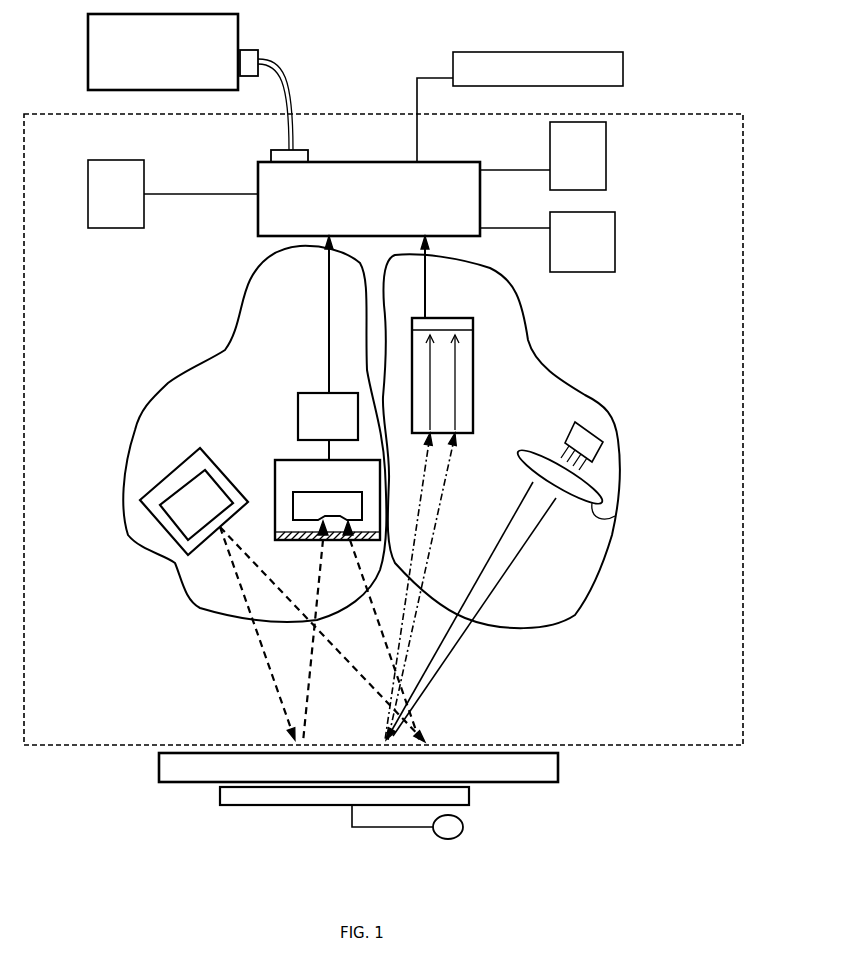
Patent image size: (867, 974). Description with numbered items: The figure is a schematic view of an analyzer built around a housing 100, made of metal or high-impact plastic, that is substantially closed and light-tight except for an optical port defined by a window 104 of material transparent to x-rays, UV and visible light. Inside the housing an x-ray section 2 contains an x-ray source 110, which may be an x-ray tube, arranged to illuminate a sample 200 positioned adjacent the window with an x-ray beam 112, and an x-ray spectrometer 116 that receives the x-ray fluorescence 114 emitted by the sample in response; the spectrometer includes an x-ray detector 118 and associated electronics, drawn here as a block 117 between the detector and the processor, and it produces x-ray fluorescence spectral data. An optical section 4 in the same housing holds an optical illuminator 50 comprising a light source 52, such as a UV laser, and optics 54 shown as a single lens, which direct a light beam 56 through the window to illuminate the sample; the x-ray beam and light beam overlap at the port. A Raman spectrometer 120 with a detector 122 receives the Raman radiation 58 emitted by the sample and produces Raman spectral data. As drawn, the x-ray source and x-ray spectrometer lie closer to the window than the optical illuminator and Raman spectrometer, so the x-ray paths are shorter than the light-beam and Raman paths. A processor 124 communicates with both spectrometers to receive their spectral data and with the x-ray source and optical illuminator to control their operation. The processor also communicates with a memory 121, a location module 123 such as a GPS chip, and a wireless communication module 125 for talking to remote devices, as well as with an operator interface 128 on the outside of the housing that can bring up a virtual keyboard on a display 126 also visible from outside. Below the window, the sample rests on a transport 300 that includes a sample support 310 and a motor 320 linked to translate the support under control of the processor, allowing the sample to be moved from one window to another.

The housing 100 is at (718, 106).
The x-ray section 2 is at (226, 356).
The optical section 4 is at (558, 380).
The optical illuminator 50 is at (530, 570).
The light source 52 is at (580, 422).
The optics 54 is at (612, 518).
The light beam 56 is at (535, 533).
The Raman radiation 58 is at (437, 512).
The window 104 is at (338, 742).
The x-ray source 110 is at (187, 478).
The x-ray beam 112 is at (275, 585).
The x-ray fluorescence 114 is at (308, 672).
The x-ray spectrometer 116 is at (282, 420).
The camera electronics 117 is at (315, 410).
The x-ray detector 118 is at (300, 498).
The Raman spectrometer 120 is at (447, 312).
The detector 122 is at (465, 327).
The memory 121 is at (114, 224).
The location module 123 is at (598, 162).
The processor 124 is at (375, 179).
The wireless communication module 125 is at (605, 246).
The display 126 is at (239, 30).
The operator interface 128 is at (516, 52).
The sample 200 is at (563, 780).
The transport 300 is at (398, 821).
The sample support 310 is at (470, 790).
The motor 320 is at (465, 827).